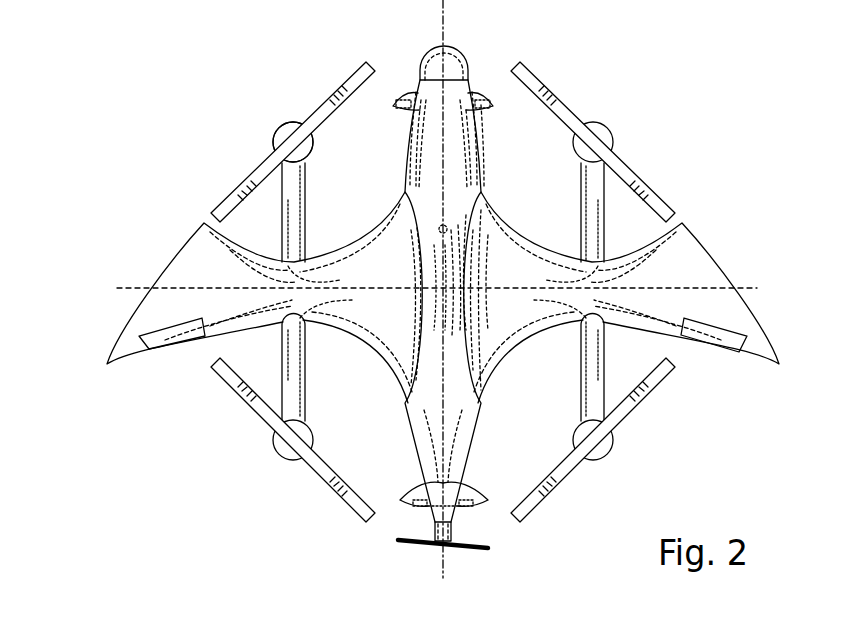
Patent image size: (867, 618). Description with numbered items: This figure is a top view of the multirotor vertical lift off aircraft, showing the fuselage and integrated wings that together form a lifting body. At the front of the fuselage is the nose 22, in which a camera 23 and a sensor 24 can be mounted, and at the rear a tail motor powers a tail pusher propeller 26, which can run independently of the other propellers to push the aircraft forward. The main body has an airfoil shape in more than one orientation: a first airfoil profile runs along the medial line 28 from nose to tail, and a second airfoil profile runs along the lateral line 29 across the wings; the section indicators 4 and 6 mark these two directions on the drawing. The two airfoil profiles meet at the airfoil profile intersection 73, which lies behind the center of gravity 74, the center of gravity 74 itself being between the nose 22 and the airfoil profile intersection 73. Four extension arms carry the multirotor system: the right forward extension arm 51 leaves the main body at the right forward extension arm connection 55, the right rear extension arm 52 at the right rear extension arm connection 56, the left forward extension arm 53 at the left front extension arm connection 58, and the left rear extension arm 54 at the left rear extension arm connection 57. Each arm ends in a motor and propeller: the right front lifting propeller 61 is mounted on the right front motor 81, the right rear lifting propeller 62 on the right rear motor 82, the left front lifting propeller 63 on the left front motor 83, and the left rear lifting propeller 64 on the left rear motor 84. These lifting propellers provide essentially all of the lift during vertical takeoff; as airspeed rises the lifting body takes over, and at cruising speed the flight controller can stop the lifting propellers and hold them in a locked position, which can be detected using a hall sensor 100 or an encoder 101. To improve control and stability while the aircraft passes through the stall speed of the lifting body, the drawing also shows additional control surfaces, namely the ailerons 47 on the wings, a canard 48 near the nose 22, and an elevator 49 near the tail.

The section line 4- 4 is at (117, 288).
The section line 6- 6 is at (443, 3).
The nose 22 is at (458, 86).
The camera 23 is at (436, 66).
The sensor 24 is at (455, 50).
The tail pusher propeller 26 is at (408, 550).
The medial line 28 is at (450, 152).
The lateral line 29 is at (127, 290).
The ailerons 47 is at (158, 348).
The canard 48 is at (408, 100).
The elevator 49 is at (472, 486).
The right forward extension arm 51 is at (588, 203).
The right rear extension arm 52 is at (592, 370).
The left forward extension arm 53 is at (298, 203).
The left rear extension arm 54 is at (296, 366).
The right forward extension arm connection 55 is at (580, 262).
The right rear extension arm connection 56 is at (586, 316).
The left rear extension arm connection 57 is at (300, 316).
The left front extension arm connection 58 is at (308, 262).
The right front lifting propeller 61 is at (540, 96).
The right rear lifting propeller 62 is at (555, 476).
The left front lifting propeller 63 is at (315, 116).
The left rear lifting propeller 64 is at (255, 412).
The airfoil profile intersection 73 is at (446, 288).
The center of gravity 74 is at (440, 225).
The right front motor 81 is at (600, 130).
The right rear motor 82 is at (607, 456).
The left front motor 83 is at (303, 152).
The left rear motor 84 is at (303, 432).
The hall sensor 100 is at (232, 136).
The encoder 101 is at (289, 130).